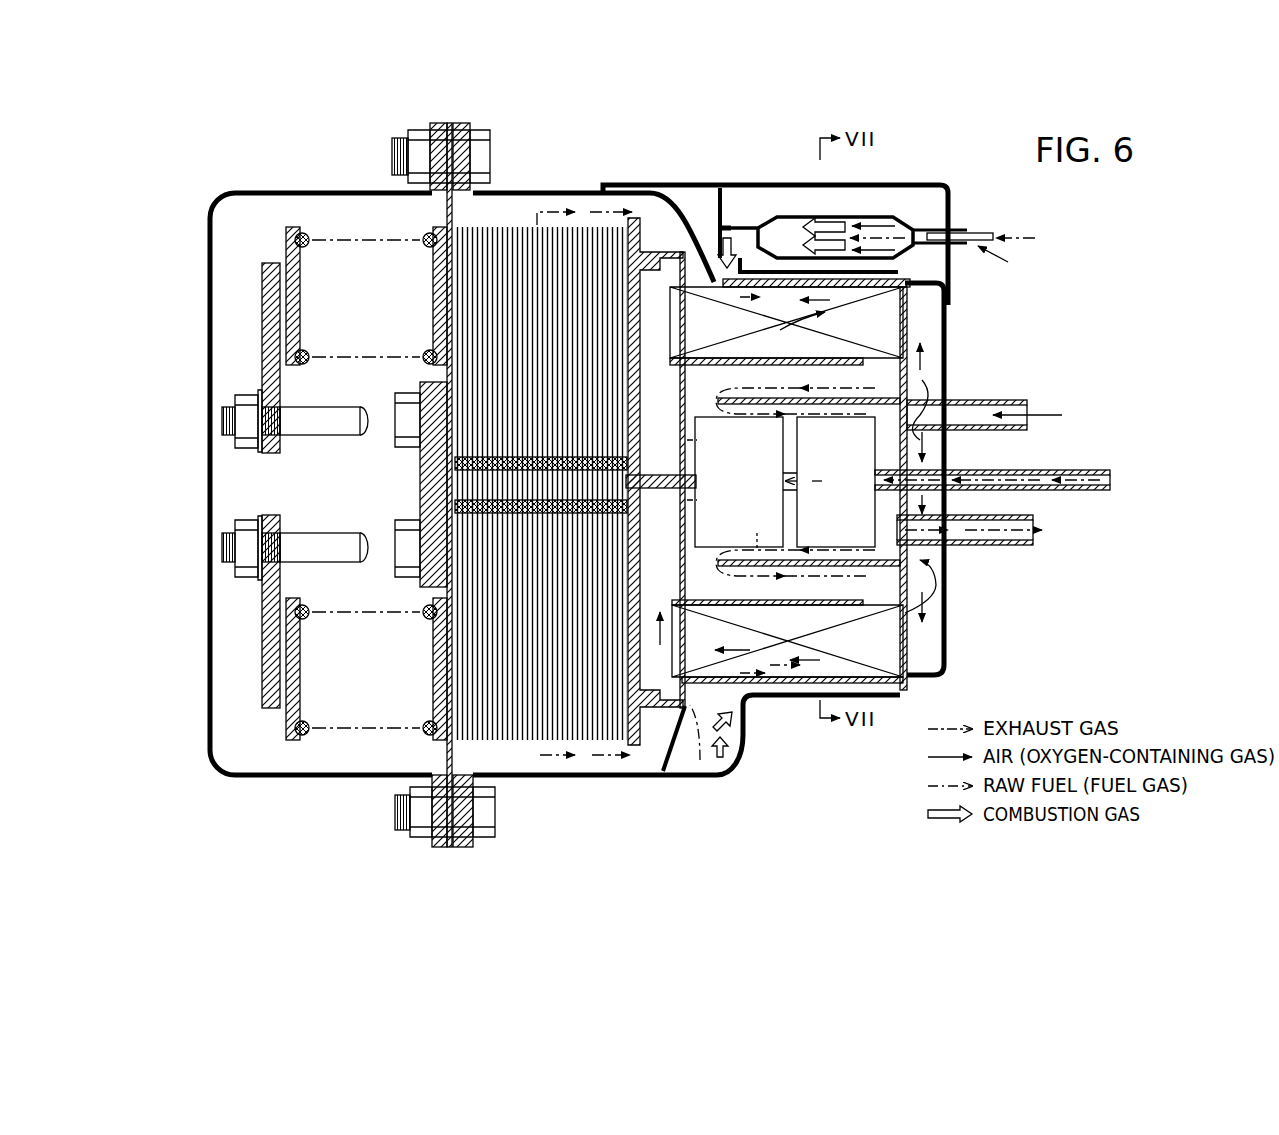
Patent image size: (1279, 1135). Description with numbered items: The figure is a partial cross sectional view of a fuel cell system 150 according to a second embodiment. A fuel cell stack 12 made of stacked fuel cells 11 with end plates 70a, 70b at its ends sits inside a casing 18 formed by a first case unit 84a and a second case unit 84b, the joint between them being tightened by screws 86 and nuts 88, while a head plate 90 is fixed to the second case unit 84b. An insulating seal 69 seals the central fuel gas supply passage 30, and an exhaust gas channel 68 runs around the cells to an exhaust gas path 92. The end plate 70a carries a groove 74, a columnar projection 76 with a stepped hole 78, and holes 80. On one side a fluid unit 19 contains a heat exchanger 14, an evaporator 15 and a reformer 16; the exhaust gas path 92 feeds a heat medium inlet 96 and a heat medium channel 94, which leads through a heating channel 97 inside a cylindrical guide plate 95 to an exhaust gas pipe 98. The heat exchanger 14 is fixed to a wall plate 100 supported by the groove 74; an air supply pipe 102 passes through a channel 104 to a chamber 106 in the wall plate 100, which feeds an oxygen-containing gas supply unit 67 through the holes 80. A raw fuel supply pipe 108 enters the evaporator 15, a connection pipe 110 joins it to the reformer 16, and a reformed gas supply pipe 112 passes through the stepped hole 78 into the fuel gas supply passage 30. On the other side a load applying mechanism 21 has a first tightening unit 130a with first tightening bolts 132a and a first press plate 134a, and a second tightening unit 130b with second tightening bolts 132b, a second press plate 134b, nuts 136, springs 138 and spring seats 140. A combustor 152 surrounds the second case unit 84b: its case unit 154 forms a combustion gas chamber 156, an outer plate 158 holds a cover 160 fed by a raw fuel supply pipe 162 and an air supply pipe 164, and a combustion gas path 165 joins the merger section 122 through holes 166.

The fuel cell 11 is at (502, 738).
The fuel cell stack 12 is at (528, 222).
The heat exchanger 14 is at (850, 300).
The evaporator 15 is at (790, 345).
The reformer 16 is at (830, 322).
The casing 18 is at (366, 792).
The fluid unit 19 is at (983, 312).
The load applying mechanism 21 is at (367, 480).
The fuel gas supply passage 30 is at (433, 490).
The oxygen-containing gas supply unit 67 is at (689, 442).
The exhaust gas channel 68 is at (586, 218).
The insulating seal 69 is at (470, 487).
The end plate 70a is at (633, 745).
The end plate 70b is at (447, 752).
The groove 74 is at (650, 712).
The columnar projection 76 is at (689, 523).
The stepped hole 78 is at (628, 483).
The hole 80 is at (686, 395).
The first case unit 84a is at (282, 176).
The second case unit 84b is at (502, 191).
The screw 86 is at (486, 140).
The nut 88 is at (397, 156).
The head plate 90 is at (947, 613).
The exhaust gas path 92 is at (648, 222).
The heat medium channel 94 is at (843, 236).
The guide plate 95 is at (851, 560).
The heat medium inlet 96 is at (704, 287).
The heating channel 97 is at (757, 546).
The exhaust gas pipe 98 is at (997, 546).
The wall plate 100 is at (697, 455).
The air supply pipe 102 is at (1027, 386).
The channel 104 is at (948, 299).
The chamber 106 is at (690, 606).
The raw fuel supply pipe 108 is at (994, 469).
The connection pipe 110 is at (795, 468).
The reformed gas supply pipe 112 is at (689, 503).
The merger section 122 is at (702, 265).
The first tightening unit 130a is at (416, 503).
The second tightening unit 130b is at (284, 560).
The first tightening bolt 132a is at (395, 420).
The second tightening bolt 132b is at (222, 421).
The first press plate 134a is at (421, 462).
The second press plate 134b is at (262, 343).
The nut 136 is at (247, 524).
The spring 138 is at (305, 735).
The spring seat 140 is at (288, 726).
The fuel cell system 150 is at (1119, 216).
The combustor 152 is at (906, 210).
The case unit 154 is at (746, 724).
The combustion gas chamber 156 is at (740, 756).
The outer plate 158 is at (873, 184).
The cover 160 is at (830, 216).
The raw fuel supply pipe 162 is at (984, 232).
The air supply pipe 164 is at (958, 246).
The combustion gas path 165 is at (738, 232).
The hole 166 is at (720, 290).